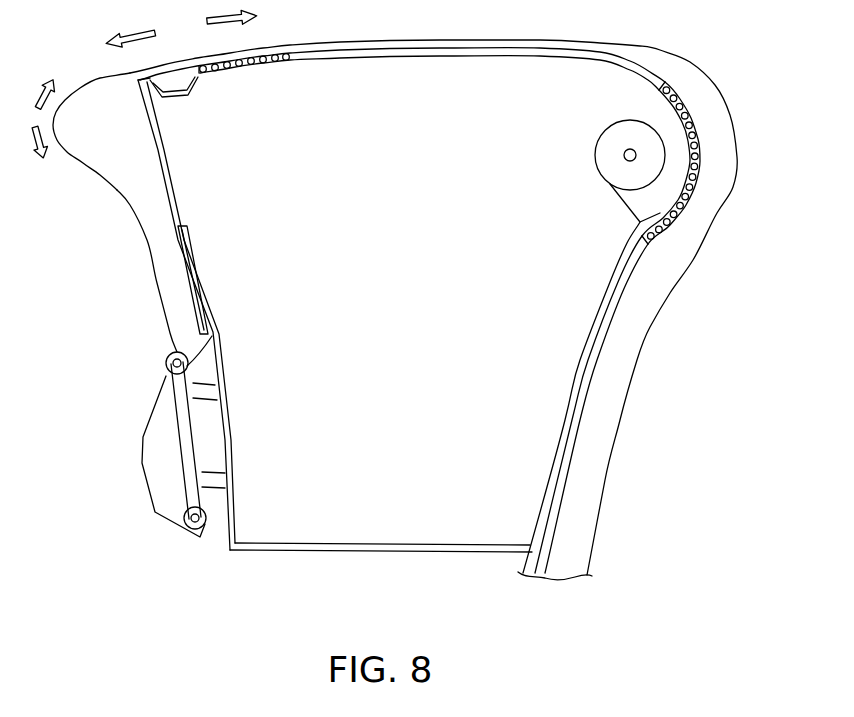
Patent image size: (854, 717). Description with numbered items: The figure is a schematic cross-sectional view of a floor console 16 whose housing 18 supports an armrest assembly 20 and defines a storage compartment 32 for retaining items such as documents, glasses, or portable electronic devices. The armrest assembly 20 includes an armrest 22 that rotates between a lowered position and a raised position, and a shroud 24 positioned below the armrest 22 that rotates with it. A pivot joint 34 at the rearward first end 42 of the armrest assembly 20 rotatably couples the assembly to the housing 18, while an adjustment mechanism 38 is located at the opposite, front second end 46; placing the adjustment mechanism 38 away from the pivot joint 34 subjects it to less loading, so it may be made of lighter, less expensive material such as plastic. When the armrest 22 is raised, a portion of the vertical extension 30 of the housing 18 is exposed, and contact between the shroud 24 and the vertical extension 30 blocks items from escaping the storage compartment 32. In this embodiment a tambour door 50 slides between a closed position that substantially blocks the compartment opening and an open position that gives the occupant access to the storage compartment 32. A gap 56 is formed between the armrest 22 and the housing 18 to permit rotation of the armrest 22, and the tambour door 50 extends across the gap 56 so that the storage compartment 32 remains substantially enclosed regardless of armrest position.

The floor console 16 is at (735, 364).
The housing 18 is at (578, 444).
The armrest assembly 20 is at (705, 67).
The armrest 22 is at (337, 42).
The shroud 24 is at (176, 258).
The vertical extension 30 is at (196, 270).
The storage compartment 32 is at (490, 108).
The pivot joint 34 is at (607, 140).
The adjustment mechanism 38 is at (185, 452).
The first end 42 is at (745, 104).
The second end 46 is at (74, 82).
The tambour door 50 is at (224, 60).
The gap 56 is at (688, 217).